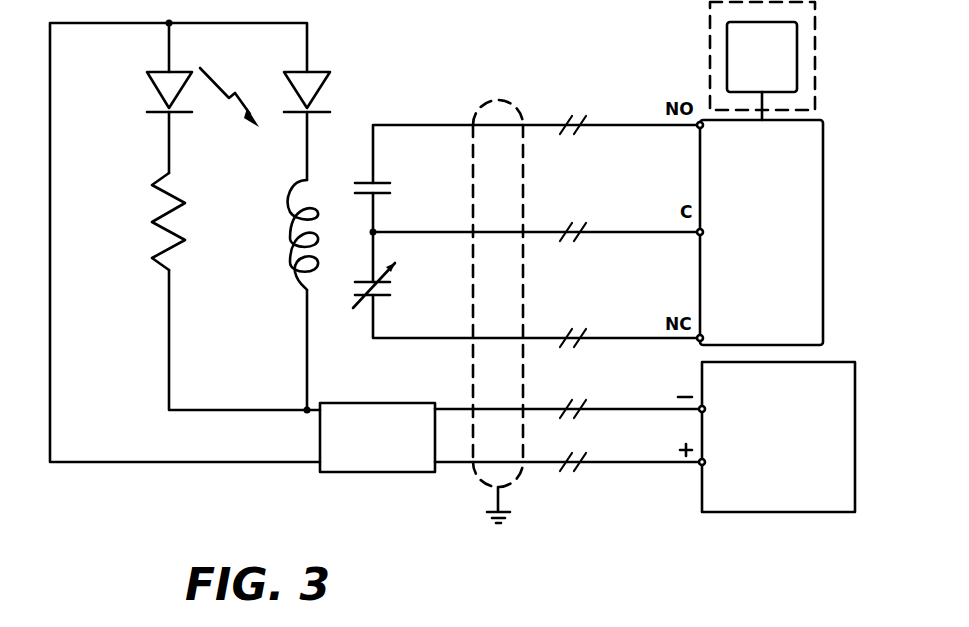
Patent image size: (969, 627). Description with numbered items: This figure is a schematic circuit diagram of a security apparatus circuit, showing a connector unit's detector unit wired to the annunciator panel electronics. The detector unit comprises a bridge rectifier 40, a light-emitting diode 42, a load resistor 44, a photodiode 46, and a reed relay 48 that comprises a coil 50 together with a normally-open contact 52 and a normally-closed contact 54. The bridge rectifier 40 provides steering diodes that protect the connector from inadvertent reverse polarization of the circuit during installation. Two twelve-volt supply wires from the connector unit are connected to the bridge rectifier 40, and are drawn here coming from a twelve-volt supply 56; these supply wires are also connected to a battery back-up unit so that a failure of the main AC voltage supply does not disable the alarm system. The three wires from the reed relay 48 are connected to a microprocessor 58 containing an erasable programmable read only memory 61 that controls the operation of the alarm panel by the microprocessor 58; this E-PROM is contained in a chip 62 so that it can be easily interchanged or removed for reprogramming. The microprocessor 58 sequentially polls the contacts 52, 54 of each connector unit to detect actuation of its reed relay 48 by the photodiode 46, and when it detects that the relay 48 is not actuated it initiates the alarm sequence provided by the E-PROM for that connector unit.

The bridge rectifier 40 is at (390, 472).
The light-emitting diode 42 is at (160, 78).
The load resistor 44 is at (160, 197).
The photodiode 46 is at (312, 88).
The reed relay 48 is at (278, 318).
The coil 50 is at (292, 240).
The normally-open contact 52 is at (386, 188).
The normally-closed contact 54 is at (386, 290).
The 12 volt power supply 56 is at (838, 472).
The microprocessor 58 is at (808, 175).
The erasable programmable read only memory 61 is at (790, 78).
The chip 62 is at (710, 58).